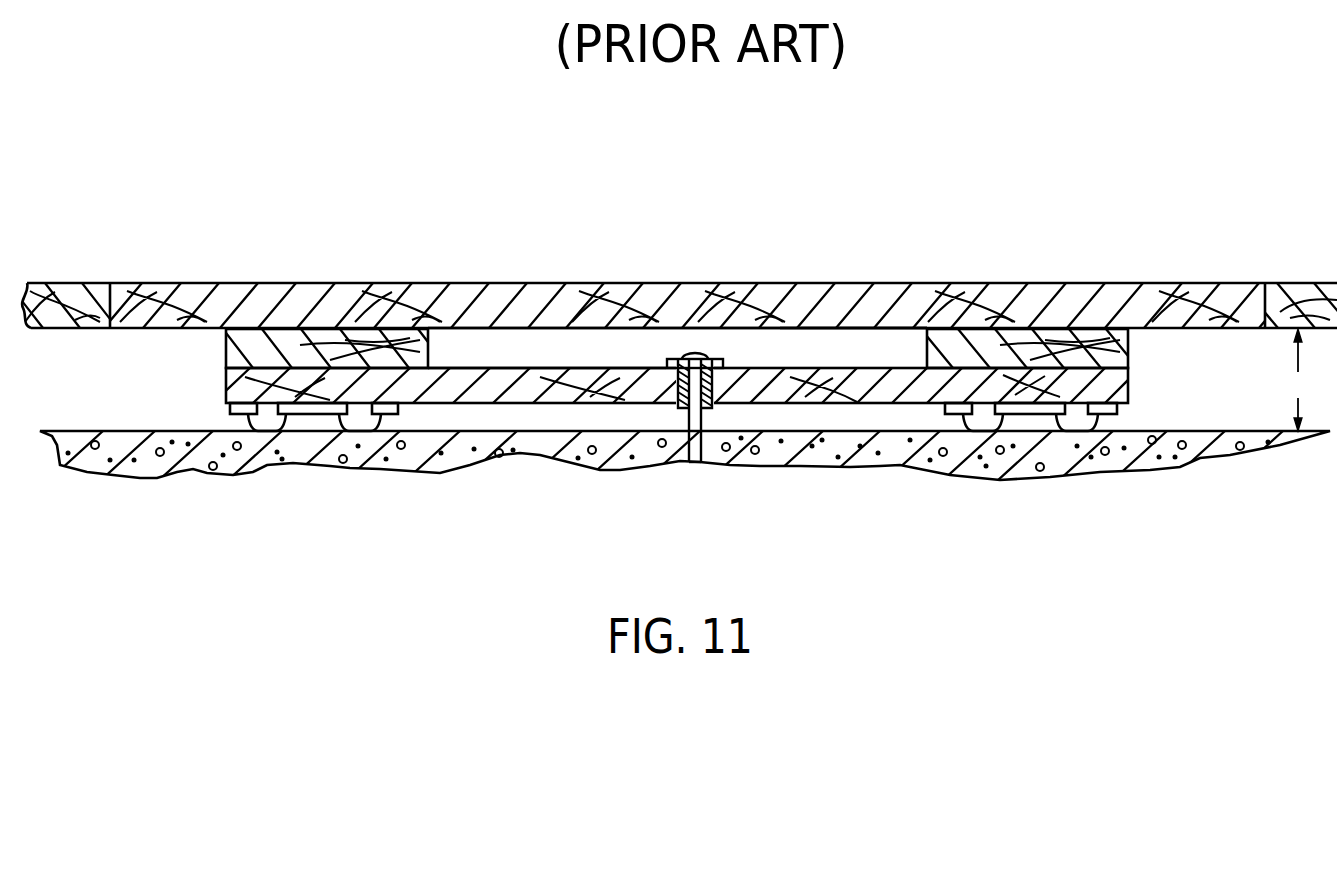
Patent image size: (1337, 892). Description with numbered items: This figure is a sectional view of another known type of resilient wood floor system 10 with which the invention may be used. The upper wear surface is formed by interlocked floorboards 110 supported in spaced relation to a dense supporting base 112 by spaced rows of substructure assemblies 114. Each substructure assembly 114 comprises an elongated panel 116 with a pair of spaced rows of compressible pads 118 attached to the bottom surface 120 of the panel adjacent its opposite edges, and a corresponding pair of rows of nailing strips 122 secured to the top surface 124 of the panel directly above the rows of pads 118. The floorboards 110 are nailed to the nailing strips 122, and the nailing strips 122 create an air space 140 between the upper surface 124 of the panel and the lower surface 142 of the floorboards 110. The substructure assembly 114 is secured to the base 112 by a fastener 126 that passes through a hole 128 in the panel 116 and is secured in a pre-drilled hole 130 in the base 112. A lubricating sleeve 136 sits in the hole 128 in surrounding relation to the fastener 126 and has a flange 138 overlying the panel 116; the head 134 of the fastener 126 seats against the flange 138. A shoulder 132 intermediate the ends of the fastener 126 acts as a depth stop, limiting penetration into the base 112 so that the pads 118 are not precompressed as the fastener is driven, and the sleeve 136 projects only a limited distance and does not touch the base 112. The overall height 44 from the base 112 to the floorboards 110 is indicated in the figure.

The prior art electronic assembly 10 is at (1084, 182).
The standoff distance 44 is at (1297, 380).
The floorboards 110 is at (550, 283).
The supporting base 112 is at (527, 447).
The substructure assembly 114 is at (200, 387).
The panel 116 is at (511, 367).
The compressible pads 118 is at (252, 420).
The bottom surface 120 is at (918, 407).
The nailing strips 122 is at (262, 340).
The top surface 124 is at (891, 368).
The fastener 126 is at (660, 422).
The hole 128 is at (712, 405).
The hole 130 is at (668, 463).
The shoulder 132 is at (700, 436).
The head 134 is at (677, 357).
The lubricating sleeve 136 is at (676, 378).
The flange 138 is at (723, 358).
The air space 140 is at (793, 345).
The lower surface 142 is at (868, 332).